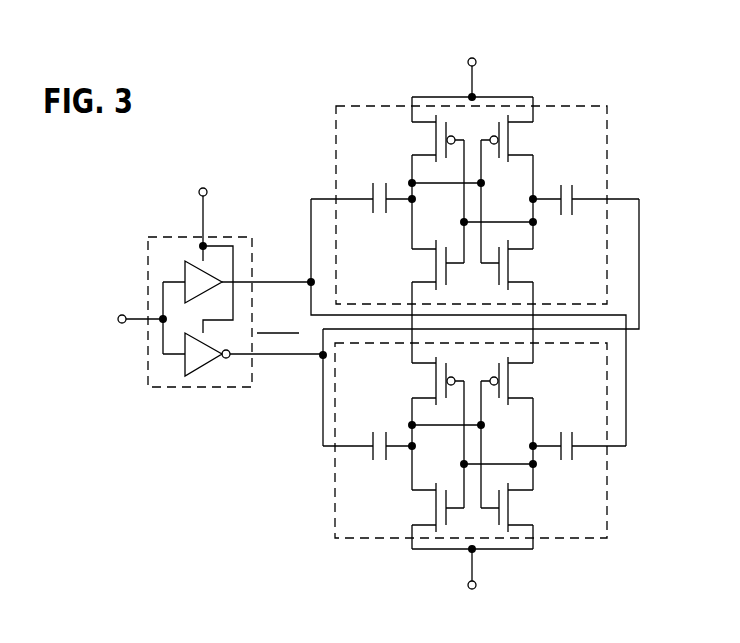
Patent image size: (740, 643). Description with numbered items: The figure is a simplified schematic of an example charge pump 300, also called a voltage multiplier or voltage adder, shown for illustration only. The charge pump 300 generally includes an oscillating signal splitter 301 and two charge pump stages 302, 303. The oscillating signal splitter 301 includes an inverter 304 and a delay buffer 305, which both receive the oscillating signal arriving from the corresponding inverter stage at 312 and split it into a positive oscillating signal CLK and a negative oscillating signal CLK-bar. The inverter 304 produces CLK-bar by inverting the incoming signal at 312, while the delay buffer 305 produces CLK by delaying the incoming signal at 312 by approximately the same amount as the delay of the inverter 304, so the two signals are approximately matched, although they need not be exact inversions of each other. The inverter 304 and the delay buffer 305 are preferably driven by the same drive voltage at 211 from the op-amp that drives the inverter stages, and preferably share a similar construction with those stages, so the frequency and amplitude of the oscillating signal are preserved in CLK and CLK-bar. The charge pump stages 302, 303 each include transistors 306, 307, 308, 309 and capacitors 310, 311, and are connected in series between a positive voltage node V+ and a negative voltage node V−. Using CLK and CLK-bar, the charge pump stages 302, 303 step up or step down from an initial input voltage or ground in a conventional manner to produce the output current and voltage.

The charge pump 300 is at (291, 97).
The oscillating signal splitter 301 is at (145, 375).
The charge pump stage 302 is at (333, 479).
The charge pump stage 303 is at (573, 104).
The inverter 304 is at (186, 365).
The delay buffer 305 is at (185, 272).
The transistor 306 is at (436, 148).
The transistor 307 is at (510, 143).
The transistor 308 is at (437, 265).
The transistor 309 is at (510, 265).
The capacitor 310 is at (373, 196).
The capacitor 311 is at (573, 192).
The oscillating signal input 312 is at (141, 318).
The drive voltage 211 is at (203, 222).